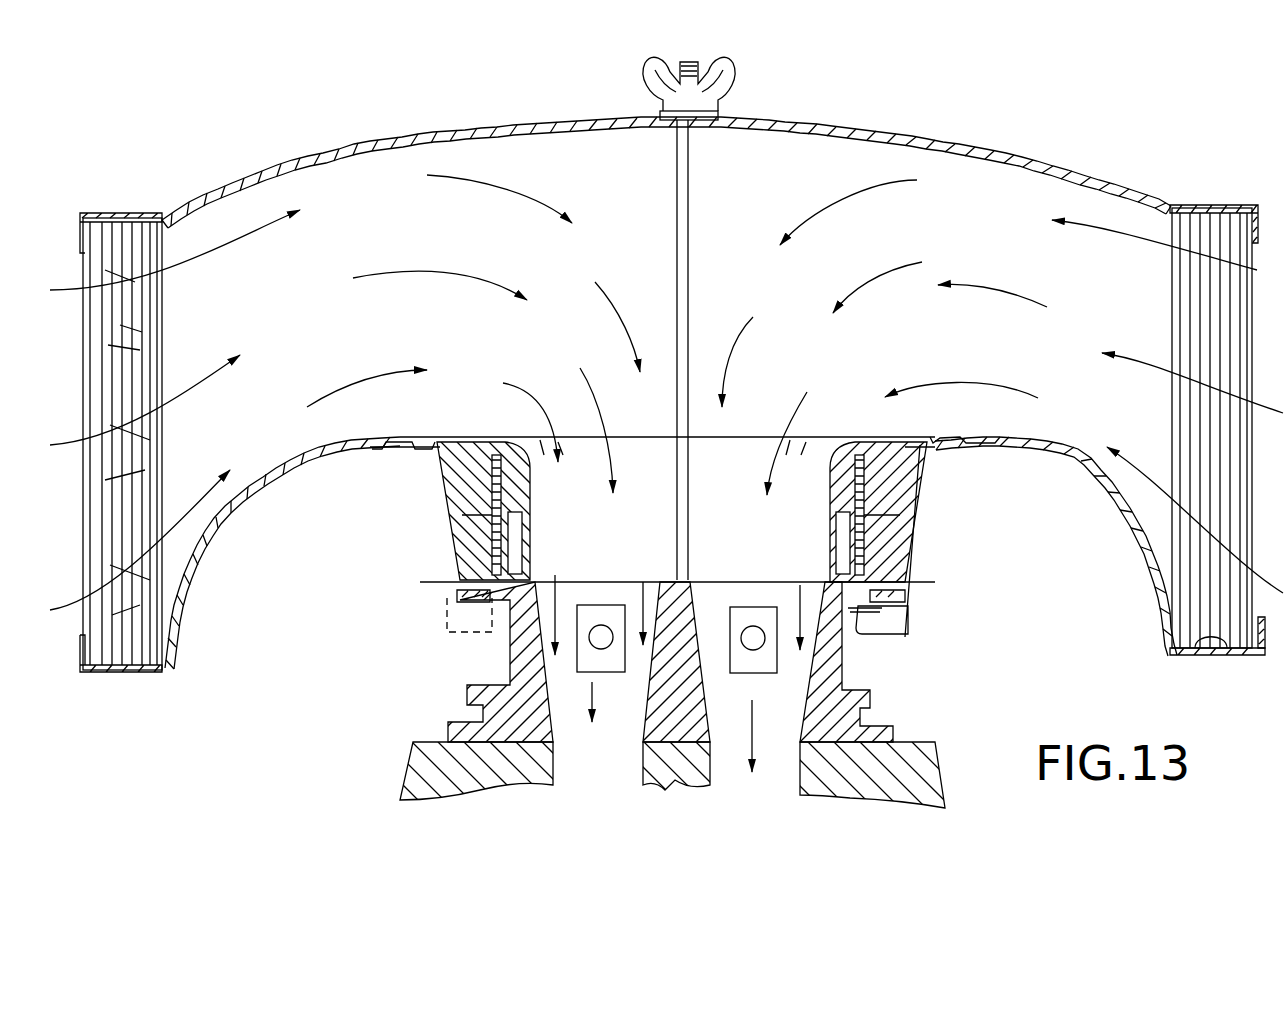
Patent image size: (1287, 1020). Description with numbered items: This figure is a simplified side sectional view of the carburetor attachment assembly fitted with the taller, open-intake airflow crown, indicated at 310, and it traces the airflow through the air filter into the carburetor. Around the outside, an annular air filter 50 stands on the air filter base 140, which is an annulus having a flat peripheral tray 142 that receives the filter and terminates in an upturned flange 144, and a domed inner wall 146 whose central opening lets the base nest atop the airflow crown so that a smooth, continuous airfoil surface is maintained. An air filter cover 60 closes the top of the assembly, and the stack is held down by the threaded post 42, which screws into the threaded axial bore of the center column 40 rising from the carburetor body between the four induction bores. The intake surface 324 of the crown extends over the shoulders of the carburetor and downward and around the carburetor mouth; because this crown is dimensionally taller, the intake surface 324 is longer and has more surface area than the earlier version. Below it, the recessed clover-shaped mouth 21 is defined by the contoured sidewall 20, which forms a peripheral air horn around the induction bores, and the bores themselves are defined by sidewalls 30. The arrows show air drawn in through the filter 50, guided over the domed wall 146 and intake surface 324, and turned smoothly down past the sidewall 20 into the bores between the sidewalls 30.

The cover 60 is at (947, 137).
The threaded post 42 is at (689, 242).
The air filter 50 is at (1210, 355).
The plate 310 is at (873, 432).
The domed inner wall 146 is at (1050, 446).
The air filter base 140 is at (1123, 522).
The peripheral tray 142 is at (1194, 648).
The upturned flange 144 is at (1262, 638).
The intake surface 324 is at (530, 472).
The contoured sidewall 20 is at (530, 598).
The center column 40 is at (700, 632).
The recessed clover-shaped mouth 21 is at (632, 603).
The sidewalls 30 is at (553, 725).